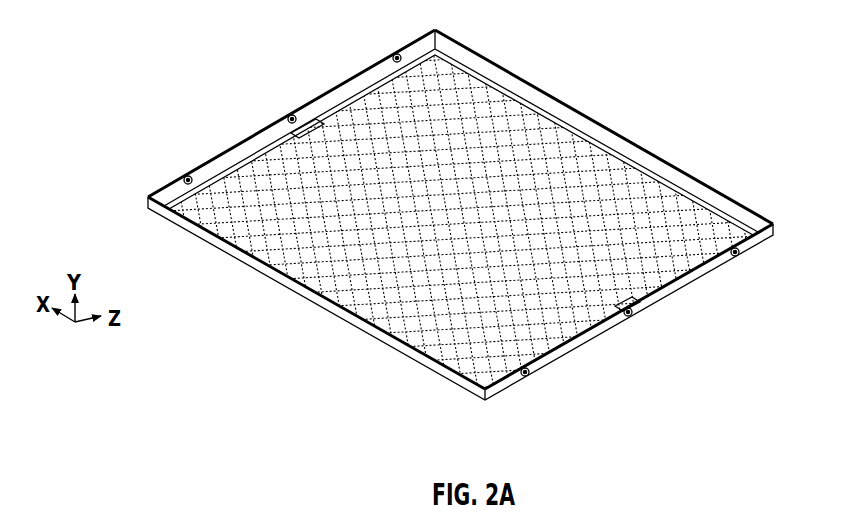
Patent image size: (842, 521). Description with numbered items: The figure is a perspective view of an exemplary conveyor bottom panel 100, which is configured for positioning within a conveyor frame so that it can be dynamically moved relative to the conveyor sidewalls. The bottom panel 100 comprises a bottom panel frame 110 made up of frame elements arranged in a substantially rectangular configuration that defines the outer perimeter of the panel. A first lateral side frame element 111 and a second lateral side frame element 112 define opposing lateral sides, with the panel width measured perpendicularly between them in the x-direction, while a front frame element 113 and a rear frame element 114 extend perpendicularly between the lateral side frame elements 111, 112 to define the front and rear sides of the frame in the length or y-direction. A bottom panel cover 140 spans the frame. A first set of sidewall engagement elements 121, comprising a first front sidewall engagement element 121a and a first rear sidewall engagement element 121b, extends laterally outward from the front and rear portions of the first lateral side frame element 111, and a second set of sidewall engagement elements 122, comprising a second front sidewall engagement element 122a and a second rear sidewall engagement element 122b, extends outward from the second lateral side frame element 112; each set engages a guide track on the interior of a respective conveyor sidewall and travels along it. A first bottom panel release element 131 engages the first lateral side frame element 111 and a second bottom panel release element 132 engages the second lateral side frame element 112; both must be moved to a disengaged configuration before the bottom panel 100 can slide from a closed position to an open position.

The conveyor bottom panel 100 is at (776, 163).
The bottom panel frame 110 is at (640, 128).
The first lateral side frame element 111 is at (600, 330).
The second lateral side frame element 112 is at (241, 145).
The front frame element 113 is at (653, 154).
The rear frame element 114 is at (386, 342).
The first set of sidewall engagement elements 121 is at (589, 377).
The first front sidewall engagement element 121a is at (742, 254).
The first rear sidewall engagement element 121b is at (531, 376).
The second set of sidewall engagement elements 122 is at (373, 53).
The second front sidewall engagement element 122a is at (393, 53).
The second rear sidewall engagement element 122b is at (184, 178).
The first bottom panel release element 131 is at (635, 313).
The second bottom panel release element 132 is at (289, 116).
The bottom panel cover 140 is at (311, 272).